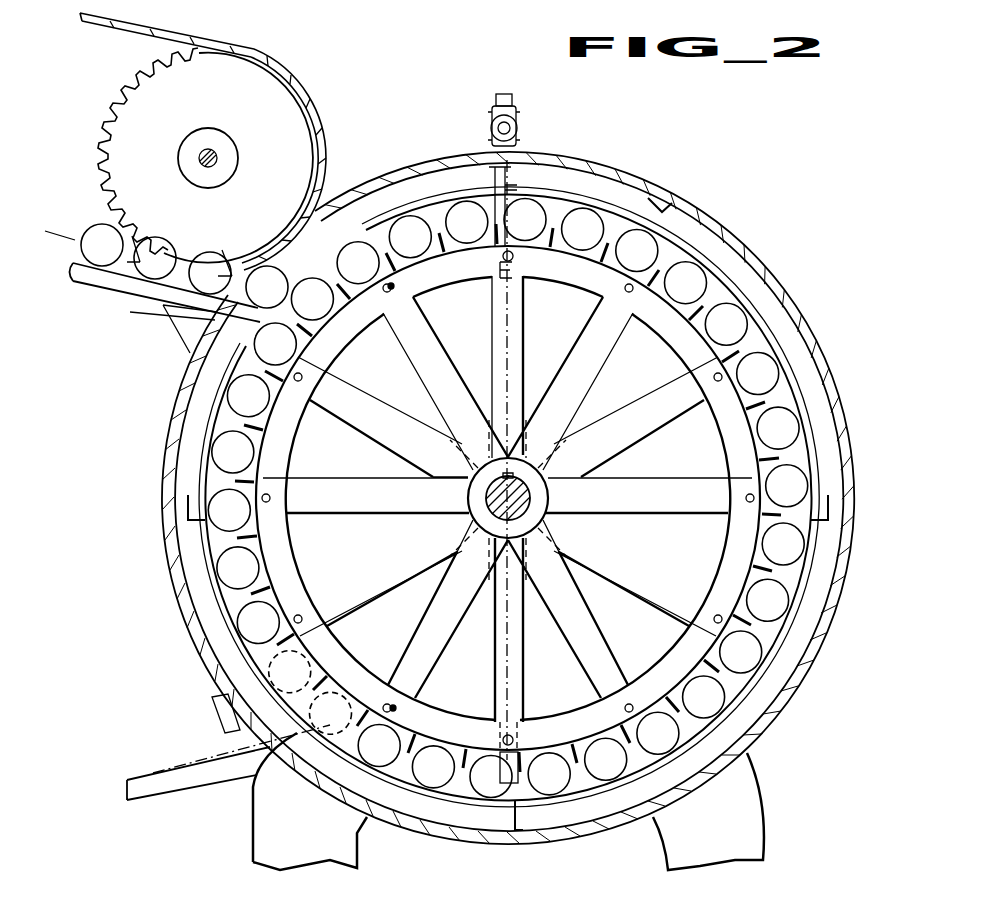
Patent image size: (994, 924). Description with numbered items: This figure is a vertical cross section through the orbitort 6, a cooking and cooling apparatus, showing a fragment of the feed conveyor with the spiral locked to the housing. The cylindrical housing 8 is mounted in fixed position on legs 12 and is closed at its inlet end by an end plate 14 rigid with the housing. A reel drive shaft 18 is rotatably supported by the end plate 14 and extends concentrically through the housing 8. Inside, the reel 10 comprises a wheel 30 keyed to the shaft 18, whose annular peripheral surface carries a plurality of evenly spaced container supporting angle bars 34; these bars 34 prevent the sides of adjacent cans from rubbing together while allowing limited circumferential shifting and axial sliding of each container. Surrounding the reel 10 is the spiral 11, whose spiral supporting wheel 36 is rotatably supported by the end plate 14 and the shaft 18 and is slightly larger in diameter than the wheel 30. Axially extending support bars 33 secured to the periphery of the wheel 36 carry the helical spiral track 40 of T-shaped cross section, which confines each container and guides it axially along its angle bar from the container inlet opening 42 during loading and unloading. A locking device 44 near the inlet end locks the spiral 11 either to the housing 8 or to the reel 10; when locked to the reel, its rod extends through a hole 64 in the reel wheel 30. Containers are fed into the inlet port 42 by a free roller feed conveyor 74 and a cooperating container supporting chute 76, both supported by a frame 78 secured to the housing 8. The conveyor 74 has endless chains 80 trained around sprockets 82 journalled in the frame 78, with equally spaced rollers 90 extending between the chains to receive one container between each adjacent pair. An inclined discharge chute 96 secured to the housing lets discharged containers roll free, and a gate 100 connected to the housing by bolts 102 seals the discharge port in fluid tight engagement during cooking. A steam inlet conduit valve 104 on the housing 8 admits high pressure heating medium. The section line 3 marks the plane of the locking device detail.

The section line 3- 3 is at (492, 178).
The orbitort 6 is at (745, 137).
The cylindrical housing 8 is at (603, 160).
The reel 10 is at (722, 288).
The spiral 11 is at (715, 245).
The legs 12 is at (345, 850).
The end plate 14 is at (702, 552).
The reel drive shaft 18 is at (528, 490).
The reel wheel 30 is at (402, 516).
The support bars 33 is at (200, 522).
The container supporting angle bars 34 is at (272, 470).
The spiral supporting wheel 36 is at (466, 375).
The helical spiral track 40 is at (453, 205).
The container inlet opening 42 is at (207, 313).
The locking device 44 is at (499, 290).
The hole 64 is at (395, 287).
The free roller feed conveyor 74 is at (298, 70).
The container supporting chute 76 is at (108, 290).
The frame 78 is at (170, 314).
The endless chain 80 is at (311, 99).
The sprocket 82 is at (218, 108).
The rollers 90 is at (237, 248).
The inclined discharge chute 96 is at (200, 790).
The gate 100 is at (250, 740).
The bolts 102 is at (210, 707).
The steam inlet conduit valve 104 is at (520, 123).